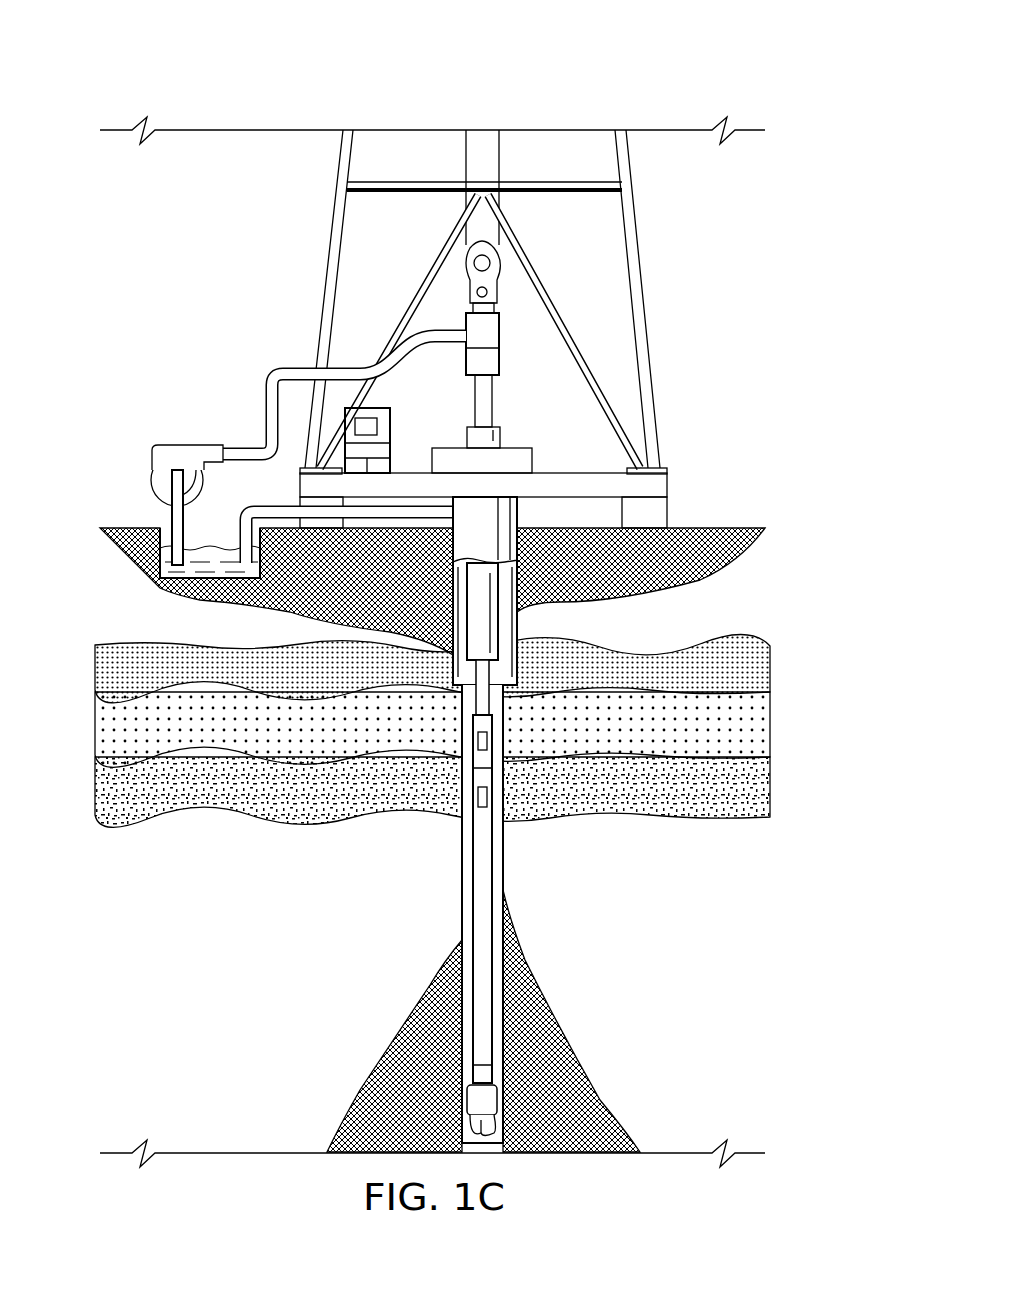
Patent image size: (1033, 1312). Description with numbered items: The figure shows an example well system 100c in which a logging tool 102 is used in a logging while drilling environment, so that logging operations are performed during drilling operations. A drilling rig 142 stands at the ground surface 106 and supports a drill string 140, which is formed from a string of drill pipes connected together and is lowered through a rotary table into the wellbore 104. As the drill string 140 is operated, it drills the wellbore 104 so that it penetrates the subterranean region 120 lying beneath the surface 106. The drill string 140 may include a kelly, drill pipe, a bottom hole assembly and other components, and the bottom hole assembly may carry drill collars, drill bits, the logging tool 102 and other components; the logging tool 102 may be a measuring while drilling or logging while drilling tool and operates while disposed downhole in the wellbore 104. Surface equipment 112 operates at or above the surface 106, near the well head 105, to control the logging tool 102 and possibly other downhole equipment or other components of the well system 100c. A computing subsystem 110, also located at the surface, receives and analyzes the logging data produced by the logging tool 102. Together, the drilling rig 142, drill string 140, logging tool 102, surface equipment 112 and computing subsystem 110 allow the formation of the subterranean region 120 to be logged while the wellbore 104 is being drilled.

The well system 100c is at (215, 101).
The logging tool 102 is at (473, 883).
The wellbore 104 is at (460, 837).
The well head 105 is at (520, 447).
The ground surface 106 is at (703, 527).
The computing subsystem 110 is at (376, 395).
The surface equipment 112 is at (490, 329).
The subterranean region 120 is at (658, 639).
The drill string 140 is at (468, 700).
The drilling rig 142 is at (262, 256).